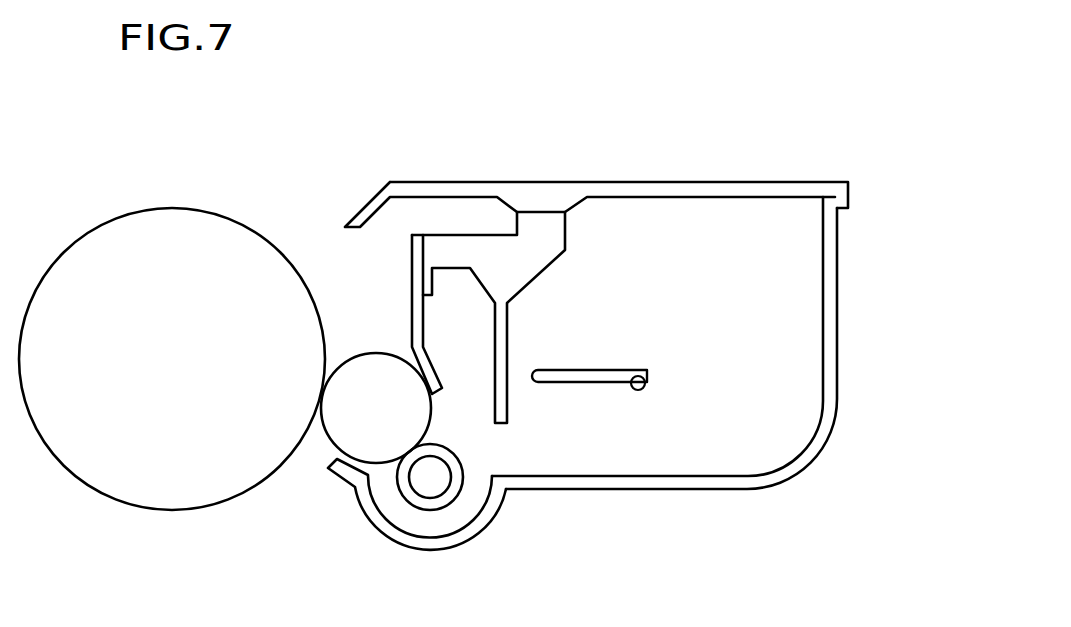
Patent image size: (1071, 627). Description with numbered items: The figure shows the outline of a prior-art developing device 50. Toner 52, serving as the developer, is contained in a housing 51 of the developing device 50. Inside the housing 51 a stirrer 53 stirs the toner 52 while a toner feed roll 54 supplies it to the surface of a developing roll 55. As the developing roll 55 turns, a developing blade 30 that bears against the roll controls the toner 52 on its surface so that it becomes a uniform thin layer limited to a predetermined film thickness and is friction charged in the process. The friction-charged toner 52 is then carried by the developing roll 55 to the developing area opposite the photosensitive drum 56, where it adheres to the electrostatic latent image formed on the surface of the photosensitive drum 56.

The developing device 50 is at (618, 172).
The housing 51 is at (757, 186).
The toner 52 is at (782, 346).
The stirrer 53 is at (593, 383).
The toner feed roll 54 is at (462, 496).
The developing roll 55 is at (333, 433).
The photosensitive drum 56 is at (193, 226).
The developing blade 30 is at (411, 338).